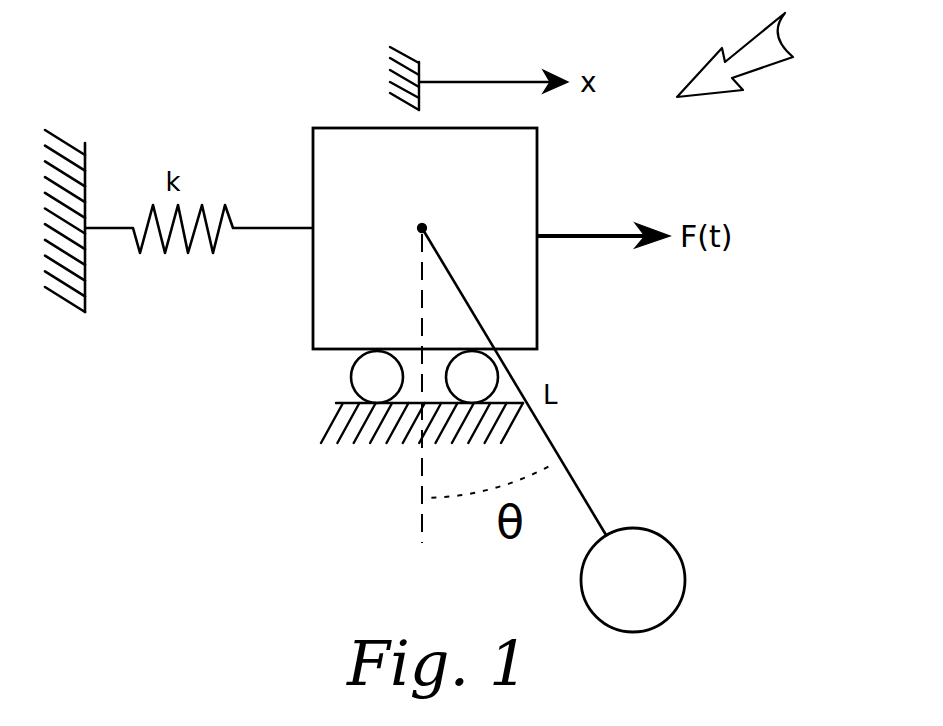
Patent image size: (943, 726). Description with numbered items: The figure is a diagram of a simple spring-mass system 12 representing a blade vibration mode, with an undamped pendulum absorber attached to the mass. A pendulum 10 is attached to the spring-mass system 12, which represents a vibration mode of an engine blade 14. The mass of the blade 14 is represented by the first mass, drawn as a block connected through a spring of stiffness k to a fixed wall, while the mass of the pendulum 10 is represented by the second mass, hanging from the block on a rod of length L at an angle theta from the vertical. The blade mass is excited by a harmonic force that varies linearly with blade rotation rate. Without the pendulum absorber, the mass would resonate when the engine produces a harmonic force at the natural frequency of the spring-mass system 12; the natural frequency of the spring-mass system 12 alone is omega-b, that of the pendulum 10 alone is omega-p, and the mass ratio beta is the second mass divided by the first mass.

The pendulum 10 is at (682, 553).
The spring-mass system 12 is at (757, 54).
The engine blade 14 is at (537, 177).